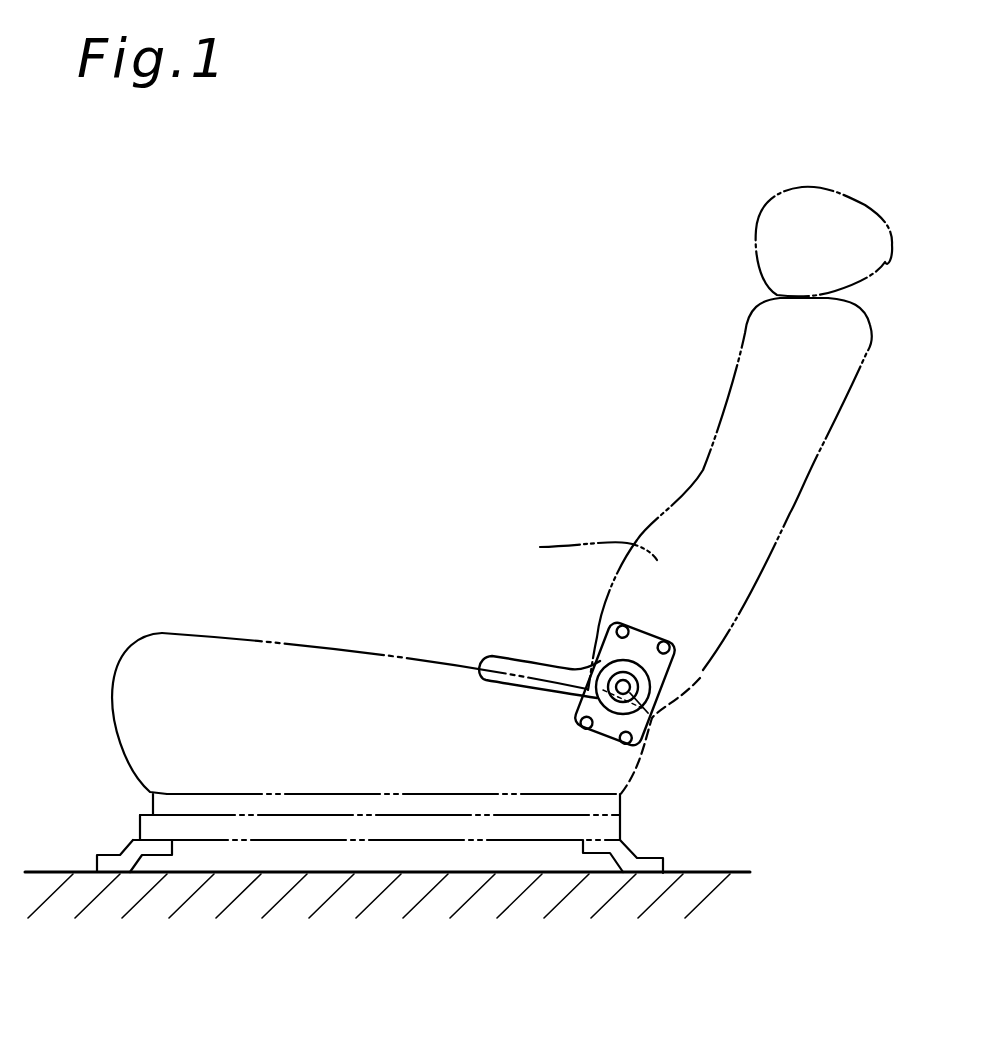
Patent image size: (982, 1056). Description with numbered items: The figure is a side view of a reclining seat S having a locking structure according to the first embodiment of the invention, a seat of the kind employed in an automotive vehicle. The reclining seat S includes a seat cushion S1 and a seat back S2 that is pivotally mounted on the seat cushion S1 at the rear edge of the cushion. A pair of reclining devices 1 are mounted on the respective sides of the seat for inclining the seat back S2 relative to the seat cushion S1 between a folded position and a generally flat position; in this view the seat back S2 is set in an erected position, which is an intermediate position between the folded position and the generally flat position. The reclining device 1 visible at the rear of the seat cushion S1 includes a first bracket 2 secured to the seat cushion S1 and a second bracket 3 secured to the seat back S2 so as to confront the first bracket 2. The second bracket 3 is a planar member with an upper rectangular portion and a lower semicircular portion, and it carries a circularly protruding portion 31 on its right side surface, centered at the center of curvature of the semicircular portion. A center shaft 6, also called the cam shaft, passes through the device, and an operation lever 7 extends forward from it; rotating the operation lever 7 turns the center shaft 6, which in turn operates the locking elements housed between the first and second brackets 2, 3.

The reclining seat S is at (313, 472).
The seat cushion S1 is at (292, 697).
The seat back S2 is at (540, 547).
The reclining device 1 is at (812, 652).
The first bracket 2 is at (640, 724).
The second bracket 3 is at (660, 667).
The circularly protruding portion 31 is at (628, 665).
The center shaft 6 is at (617, 689).
The operation lever 7 is at (523, 668).